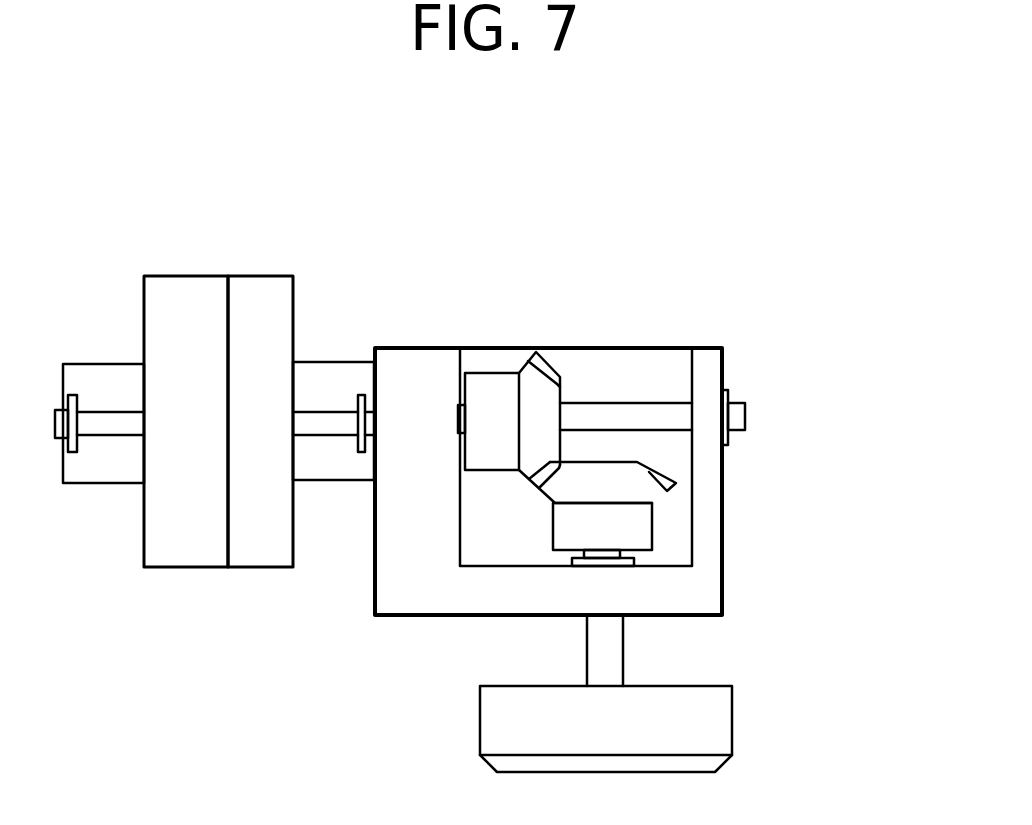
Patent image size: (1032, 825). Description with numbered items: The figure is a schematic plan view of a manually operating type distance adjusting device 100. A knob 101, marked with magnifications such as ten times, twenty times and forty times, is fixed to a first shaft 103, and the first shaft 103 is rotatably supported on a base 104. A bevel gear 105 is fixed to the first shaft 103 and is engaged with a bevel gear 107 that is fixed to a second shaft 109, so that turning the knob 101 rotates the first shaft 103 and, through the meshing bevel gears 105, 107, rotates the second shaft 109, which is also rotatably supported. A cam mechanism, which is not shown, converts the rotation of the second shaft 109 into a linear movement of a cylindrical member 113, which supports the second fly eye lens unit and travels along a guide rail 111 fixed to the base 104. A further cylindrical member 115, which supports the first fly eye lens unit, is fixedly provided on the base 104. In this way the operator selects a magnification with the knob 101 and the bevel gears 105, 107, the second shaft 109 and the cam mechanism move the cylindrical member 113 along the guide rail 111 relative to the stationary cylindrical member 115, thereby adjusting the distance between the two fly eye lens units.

The distance adjusting device 100 is at (765, 330).
The knob 101 is at (718, 718).
The first shaft 103 is at (603, 657).
The base 104 is at (702, 588).
The bevel gear 105 is at (645, 490).
The bevel gear 107 is at (532, 393).
The second shaft 109 is at (628, 418).
The guide rail 111 is at (105, 465).
The cylindrical member 113 is at (268, 553).
The cylindrical member 115 is at (193, 553).